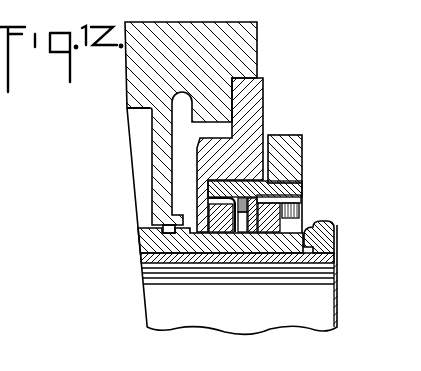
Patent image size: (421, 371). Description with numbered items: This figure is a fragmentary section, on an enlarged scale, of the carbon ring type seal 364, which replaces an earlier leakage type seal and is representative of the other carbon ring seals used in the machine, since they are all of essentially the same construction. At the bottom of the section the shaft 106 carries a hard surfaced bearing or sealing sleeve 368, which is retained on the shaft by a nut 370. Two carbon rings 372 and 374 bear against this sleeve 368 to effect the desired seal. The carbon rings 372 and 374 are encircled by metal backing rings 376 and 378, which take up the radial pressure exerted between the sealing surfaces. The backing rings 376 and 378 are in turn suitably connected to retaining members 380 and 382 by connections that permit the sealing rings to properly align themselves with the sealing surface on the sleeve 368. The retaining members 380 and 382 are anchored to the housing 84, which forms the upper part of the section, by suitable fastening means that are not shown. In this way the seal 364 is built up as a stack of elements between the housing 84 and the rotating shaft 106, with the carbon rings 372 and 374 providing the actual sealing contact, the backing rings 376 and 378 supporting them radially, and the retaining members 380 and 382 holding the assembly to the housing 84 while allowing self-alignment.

The housing 84 is at (250, 38).
The retaining member 380 is at (264, 77).
The carbon ring type seal 364 is at (272, 98).
The retaining member 382 is at (320, 116).
The metal backing ring 378 is at (304, 183).
The metal backing ring 376 is at (200, 197).
The carbon ring 374 is at (275, 213).
The nut 370 is at (336, 244).
The carbon ring 372 is at (225, 243).
The sealing sleeve 368 is at (288, 247).
The shaft 106 is at (150, 263).